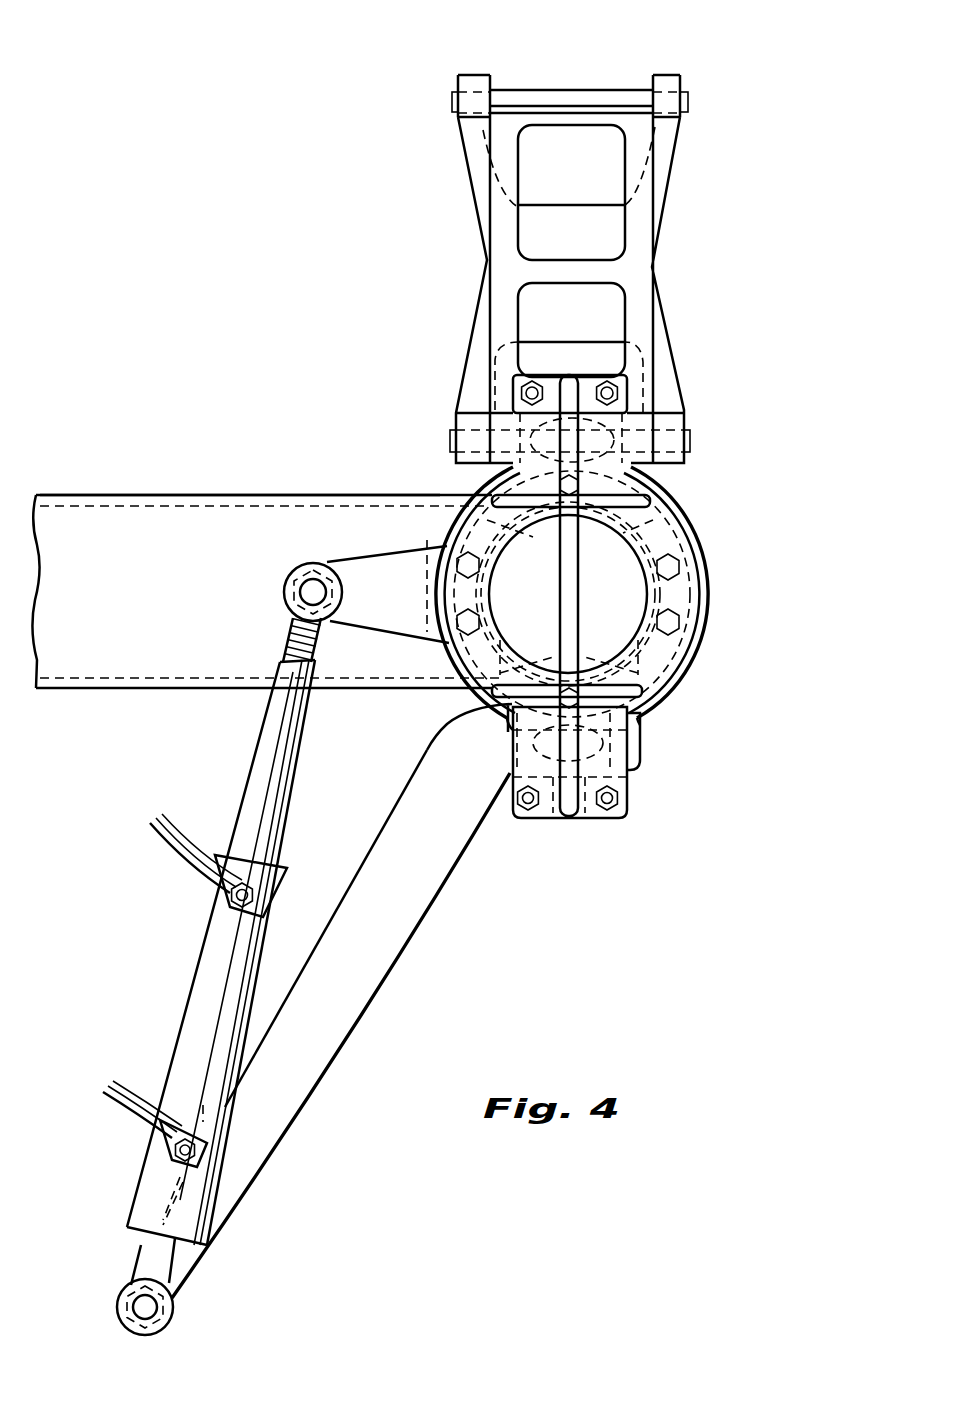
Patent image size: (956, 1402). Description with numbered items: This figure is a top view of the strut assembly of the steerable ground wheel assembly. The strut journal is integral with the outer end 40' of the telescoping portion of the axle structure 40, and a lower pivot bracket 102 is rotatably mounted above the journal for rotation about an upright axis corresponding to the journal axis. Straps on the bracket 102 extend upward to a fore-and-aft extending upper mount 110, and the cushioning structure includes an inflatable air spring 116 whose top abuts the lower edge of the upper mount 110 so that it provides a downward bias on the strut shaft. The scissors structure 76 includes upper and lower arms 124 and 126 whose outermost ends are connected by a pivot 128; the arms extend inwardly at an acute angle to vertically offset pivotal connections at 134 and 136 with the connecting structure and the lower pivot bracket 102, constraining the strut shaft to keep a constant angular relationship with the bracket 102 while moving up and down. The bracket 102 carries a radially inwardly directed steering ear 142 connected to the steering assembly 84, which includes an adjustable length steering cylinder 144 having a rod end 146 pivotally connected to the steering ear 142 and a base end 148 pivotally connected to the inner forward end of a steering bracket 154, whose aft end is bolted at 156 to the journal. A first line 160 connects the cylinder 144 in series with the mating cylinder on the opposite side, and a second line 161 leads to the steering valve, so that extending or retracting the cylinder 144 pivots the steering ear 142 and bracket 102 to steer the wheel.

The axle structure 40 is at (240, 432).
The outer end of the telescoping portion of the axle structure 40' is at (266, 567).
The scissors structure 76 is at (684, 60).
The steering assembly 84 is at (440, 1019).
The lower pivot bracket 102 is at (660, 520).
The upper mount 110 is at (568, 576).
The air spring 116 is at (700, 583).
The upper arm 124 is at (505, 149).
The lower arm 126 is at (480, 188).
The pivot 128 is at (572, 90).
The pivotal connection 134 is at (647, 398).
The pivotal connection 136 is at (456, 442).
The steering ear 142 is at (340, 562).
The steering cylinder 144 is at (208, 962).
The rod end 146 is at (292, 634).
The base end 148 is at (143, 1240).
The steering bracket 154 is at (447, 860).
The bolted connection 156 is at (508, 730).
The first line 160 is at (127, 1128).
The second line 161 is at (180, 860).